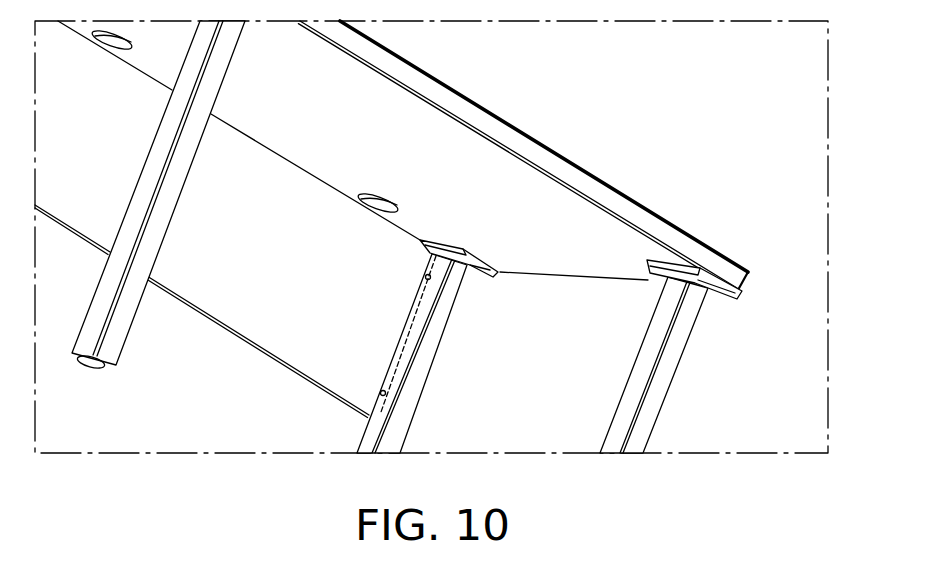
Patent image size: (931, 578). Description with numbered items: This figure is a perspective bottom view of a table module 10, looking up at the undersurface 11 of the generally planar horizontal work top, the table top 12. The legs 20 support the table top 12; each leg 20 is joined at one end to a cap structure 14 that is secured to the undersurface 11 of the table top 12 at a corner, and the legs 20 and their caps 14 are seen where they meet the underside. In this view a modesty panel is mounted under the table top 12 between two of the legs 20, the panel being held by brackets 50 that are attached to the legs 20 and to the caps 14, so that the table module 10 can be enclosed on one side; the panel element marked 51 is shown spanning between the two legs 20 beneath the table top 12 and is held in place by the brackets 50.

The table module 10 is at (408, 237).
The undersurface 11 is at (415, 161).
The table top 12 is at (490, 125).
The cap structure 14 is at (723, 297).
The leg 20 is at (163, 157).
The bracket 50 is at (400, 375).
The side panel 51 is at (308, 257).